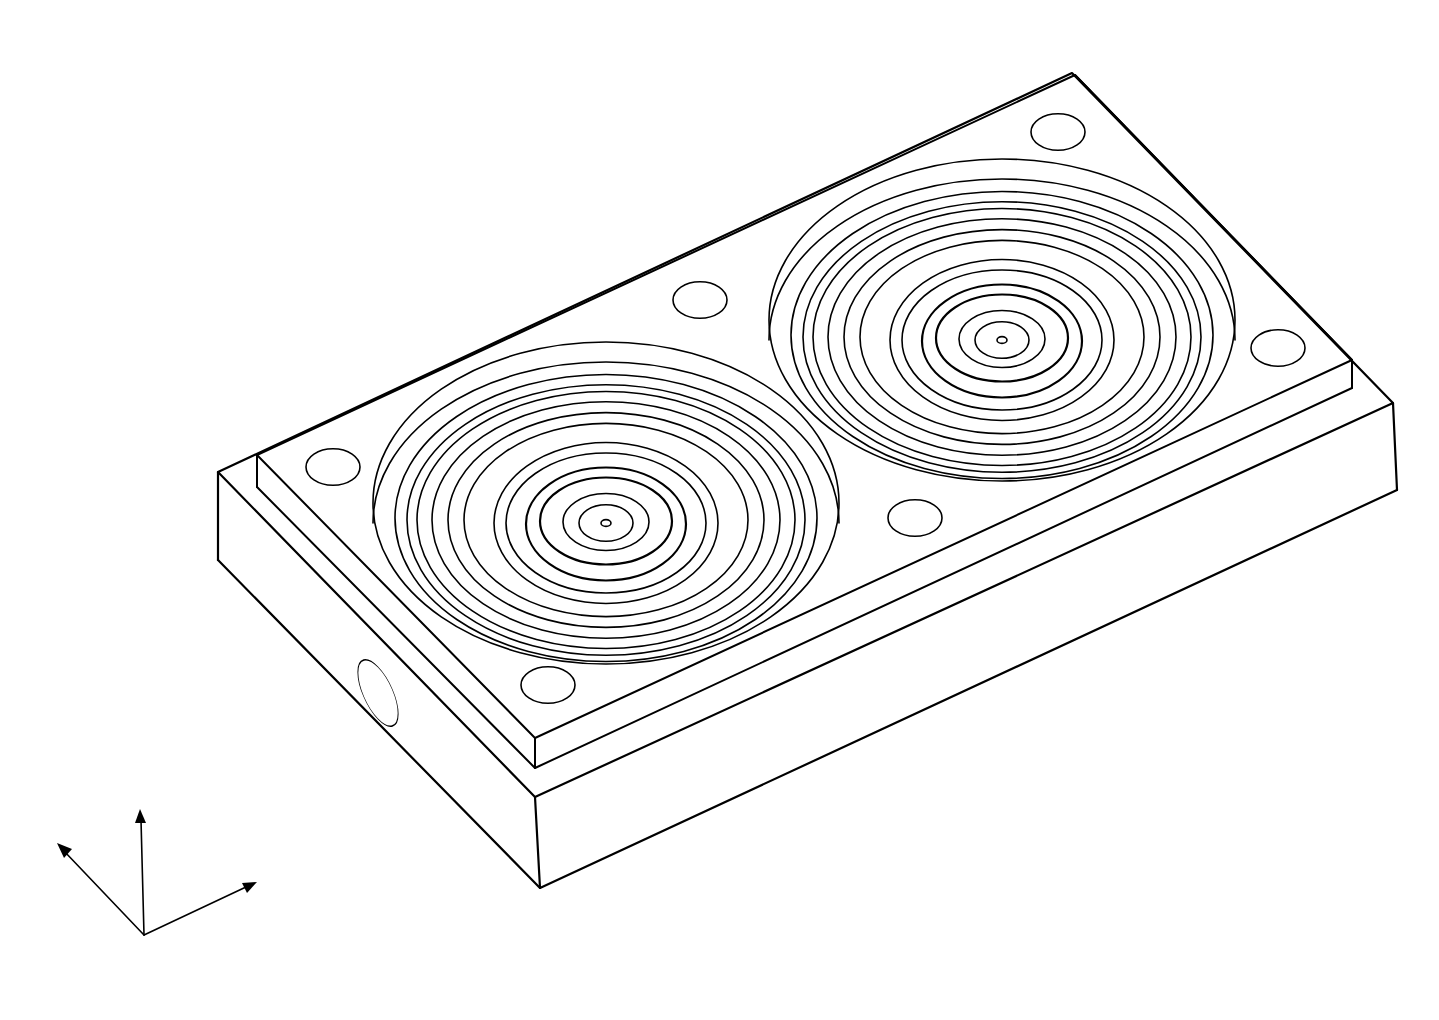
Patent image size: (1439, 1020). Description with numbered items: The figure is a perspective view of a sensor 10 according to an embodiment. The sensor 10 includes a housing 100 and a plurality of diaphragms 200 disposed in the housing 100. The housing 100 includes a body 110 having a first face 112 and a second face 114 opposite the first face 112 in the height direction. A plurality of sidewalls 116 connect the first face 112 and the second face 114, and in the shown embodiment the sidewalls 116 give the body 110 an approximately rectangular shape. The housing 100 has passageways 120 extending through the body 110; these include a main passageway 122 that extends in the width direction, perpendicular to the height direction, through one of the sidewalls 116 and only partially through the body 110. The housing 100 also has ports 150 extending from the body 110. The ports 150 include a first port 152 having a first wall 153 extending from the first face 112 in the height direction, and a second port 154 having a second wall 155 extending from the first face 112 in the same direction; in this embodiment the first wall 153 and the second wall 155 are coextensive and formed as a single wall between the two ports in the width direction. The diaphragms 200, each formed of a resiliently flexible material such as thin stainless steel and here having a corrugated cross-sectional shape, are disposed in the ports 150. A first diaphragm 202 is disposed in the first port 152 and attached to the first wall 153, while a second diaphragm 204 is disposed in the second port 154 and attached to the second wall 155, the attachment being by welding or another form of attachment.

The sensor 10 is at (238, 134).
The housing 100 is at (446, 834).
The body 110 is at (198, 517).
The first face 112 is at (1193, 485).
The second face 114 is at (710, 810).
The sidewalls 116 is at (248, 578).
The passageways 120 is at (300, 700).
The main passageway 122 is at (368, 705).
The ports 150 is at (804, 414).
The first port 152 is at (1140, 145).
The first wall 153 is at (1270, 293).
The second port 154 is at (363, 405).
The second wall 155 is at (347, 528).
The diaphragms 200 is at (804, 367).
The first diaphragm 202 is at (960, 290).
The second diaphragm 204 is at (592, 432).